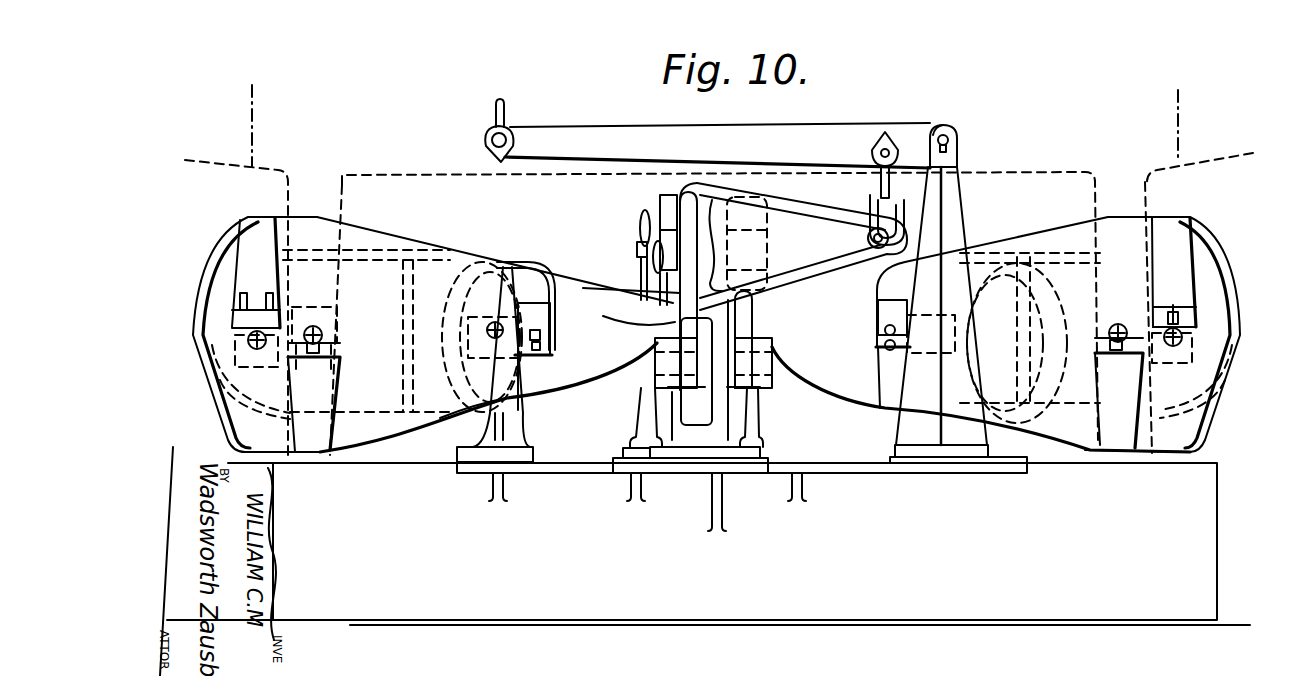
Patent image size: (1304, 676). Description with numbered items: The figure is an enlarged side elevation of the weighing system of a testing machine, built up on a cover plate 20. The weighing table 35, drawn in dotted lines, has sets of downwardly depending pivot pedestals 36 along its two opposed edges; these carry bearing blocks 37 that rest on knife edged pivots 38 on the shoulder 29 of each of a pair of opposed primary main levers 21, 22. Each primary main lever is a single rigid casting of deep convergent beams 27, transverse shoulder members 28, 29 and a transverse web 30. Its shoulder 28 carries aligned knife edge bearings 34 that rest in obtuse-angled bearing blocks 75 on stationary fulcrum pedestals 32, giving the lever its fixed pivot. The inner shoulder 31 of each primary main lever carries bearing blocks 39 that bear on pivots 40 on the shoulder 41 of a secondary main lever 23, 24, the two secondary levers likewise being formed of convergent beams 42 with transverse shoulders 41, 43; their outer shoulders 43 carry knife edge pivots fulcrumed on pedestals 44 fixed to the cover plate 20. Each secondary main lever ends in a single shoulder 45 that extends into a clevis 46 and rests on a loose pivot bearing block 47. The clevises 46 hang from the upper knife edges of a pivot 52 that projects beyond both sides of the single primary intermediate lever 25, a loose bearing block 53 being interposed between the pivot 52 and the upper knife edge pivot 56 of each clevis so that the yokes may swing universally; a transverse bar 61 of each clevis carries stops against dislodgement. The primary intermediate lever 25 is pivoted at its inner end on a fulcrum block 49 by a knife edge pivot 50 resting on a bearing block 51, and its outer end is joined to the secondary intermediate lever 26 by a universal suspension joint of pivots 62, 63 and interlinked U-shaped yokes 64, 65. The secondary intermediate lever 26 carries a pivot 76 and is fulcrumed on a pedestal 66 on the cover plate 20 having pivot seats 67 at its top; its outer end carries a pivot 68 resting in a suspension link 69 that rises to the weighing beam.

The cover plate 20 is at (708, 544).
The primary main lever 21 is at (1230, 268).
The primary main lever 22 is at (246, 334).
The secondary main lever 23 is at (872, 400).
The secondary main lever 24 is at (525, 364).
The primary intermediate lever 25 is at (802, 246).
The secondary intermediate lever 26 is at (735, 132).
The convergent beams 27 is at (1222, 430).
The transverse shoulder member 28 is at (1175, 252).
The transverse shoulder member 29 is at (1112, 378).
The transverse web 30 is at (1030, 300).
The shoulder 31 is at (880, 310).
The fulcrum pedestal 32 is at (1193, 380).
The knife edge bearing 34 is at (1183, 318).
The table 35 is at (719, 270).
The pivot pedestal 36 is at (1140, 196).
The bearing block 37 is at (1110, 332).
The knife edged pivot 38 is at (1113, 342).
The bearing block 39 is at (885, 330).
The pivot 40 is at (885, 347).
The transverse shoulder 41 is at (890, 372).
The convergent beams 42 is at (805, 380).
The transverse shoulder 43 is at (490, 270).
The fulcrum pedestal 44 is at (518, 424).
The shoulder 45 is at (639, 308).
The clevis 46 is at (770, 325).
The loose pivot bearing block 47 is at (772, 345).
The fulcrum block 49 is at (627, 398).
The knife edge pivot 50 is at (640, 220).
The bearing block 51 is at (637, 246).
The pivot 52 is at (653, 258).
The loose pivot bearing block 53 is at (660, 210).
The upper knife edge pivot 56 is at (688, 188).
The transverse bar 61 is at (621, 283).
The pivot 62 is at (875, 250).
The pivot 63 is at (876, 150).
The U-shaped yoke 64 is at (905, 232).
The U-shaped yoke 65 is at (881, 183).
The pedestal 66 is at (955, 232).
The pivot seat 67 is at (957, 150).
The pivot 68 is at (512, 130).
The suspension link 69 is at (504, 105).
The bearing block 75 is at (1182, 335).
The pivot 76 is at (952, 128).